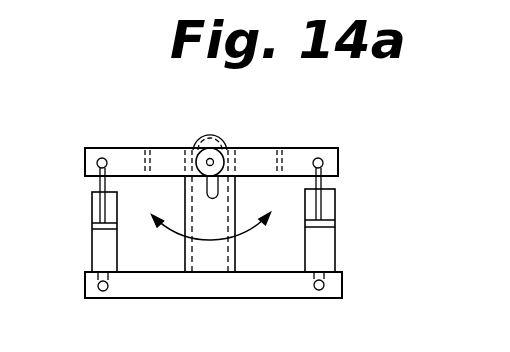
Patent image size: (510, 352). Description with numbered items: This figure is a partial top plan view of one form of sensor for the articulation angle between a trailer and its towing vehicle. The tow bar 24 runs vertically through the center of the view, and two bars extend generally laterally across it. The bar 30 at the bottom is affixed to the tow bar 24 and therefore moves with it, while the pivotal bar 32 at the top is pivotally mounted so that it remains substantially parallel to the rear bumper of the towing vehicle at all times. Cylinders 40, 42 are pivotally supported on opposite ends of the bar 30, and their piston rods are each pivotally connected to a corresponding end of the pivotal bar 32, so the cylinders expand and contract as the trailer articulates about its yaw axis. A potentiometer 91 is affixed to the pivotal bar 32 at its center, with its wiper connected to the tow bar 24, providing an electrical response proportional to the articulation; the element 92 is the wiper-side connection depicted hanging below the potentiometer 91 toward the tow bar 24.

The pivotal bar 32 is at (322, 125).
The potentiometer 91 is at (253, 118).
The pivot pin tab 92 is at (207, 192).
The tow bar 24 is at (218, 252).
The cylinder 42 is at (92, 242).
The cylinder 40 is at (337, 242).
The bar 30 is at (146, 290).